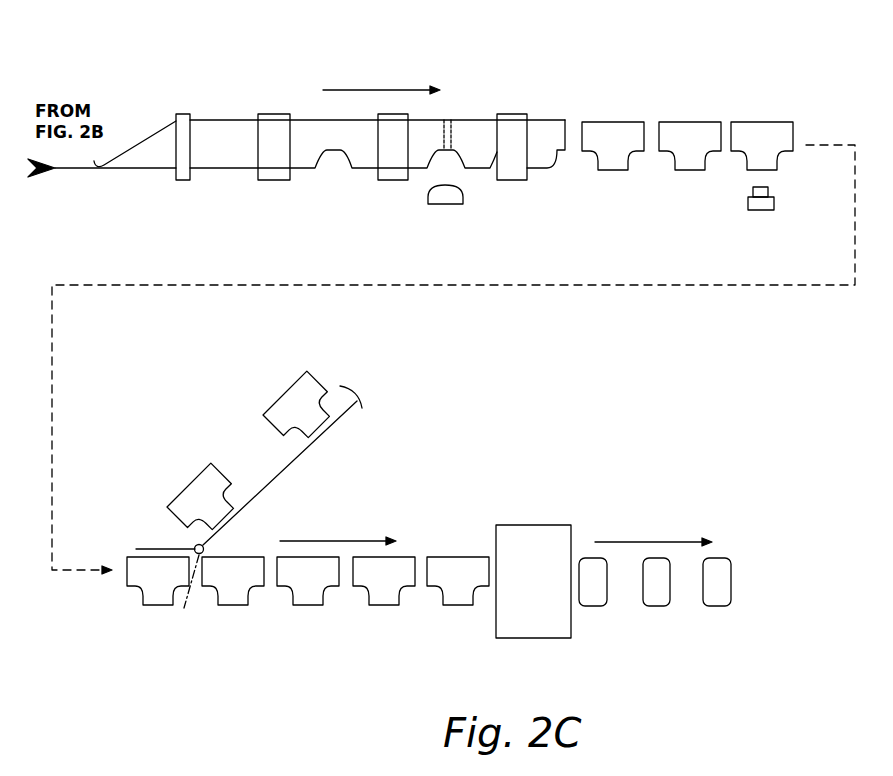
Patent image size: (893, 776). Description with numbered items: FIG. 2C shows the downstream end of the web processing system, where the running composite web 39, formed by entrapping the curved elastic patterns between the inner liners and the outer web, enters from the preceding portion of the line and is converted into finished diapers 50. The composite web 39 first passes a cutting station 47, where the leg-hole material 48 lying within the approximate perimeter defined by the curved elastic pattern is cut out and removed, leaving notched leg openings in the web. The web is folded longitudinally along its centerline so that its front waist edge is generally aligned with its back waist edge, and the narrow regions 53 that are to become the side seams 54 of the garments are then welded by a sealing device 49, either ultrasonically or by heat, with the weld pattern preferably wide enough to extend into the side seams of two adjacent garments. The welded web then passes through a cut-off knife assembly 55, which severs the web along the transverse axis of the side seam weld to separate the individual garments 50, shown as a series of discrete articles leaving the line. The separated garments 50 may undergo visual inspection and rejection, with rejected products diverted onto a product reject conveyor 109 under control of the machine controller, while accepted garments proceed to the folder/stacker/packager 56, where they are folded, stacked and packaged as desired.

The composite web 39 is at (75, 176).
The cutting station 47 is at (278, 170).
The leg-hole material 48 is at (451, 200).
The sealing device 49 is at (397, 168).
The diaper 50 is at (617, 133).
The side seam weld region 53 is at (331, 141).
The side seam 54 is at (456, 130).
The cut-off knife assembly 55 is at (514, 172).
The folder/stacker/packager 56 is at (524, 553).
The product reject conveyor 109 is at (177, 548).